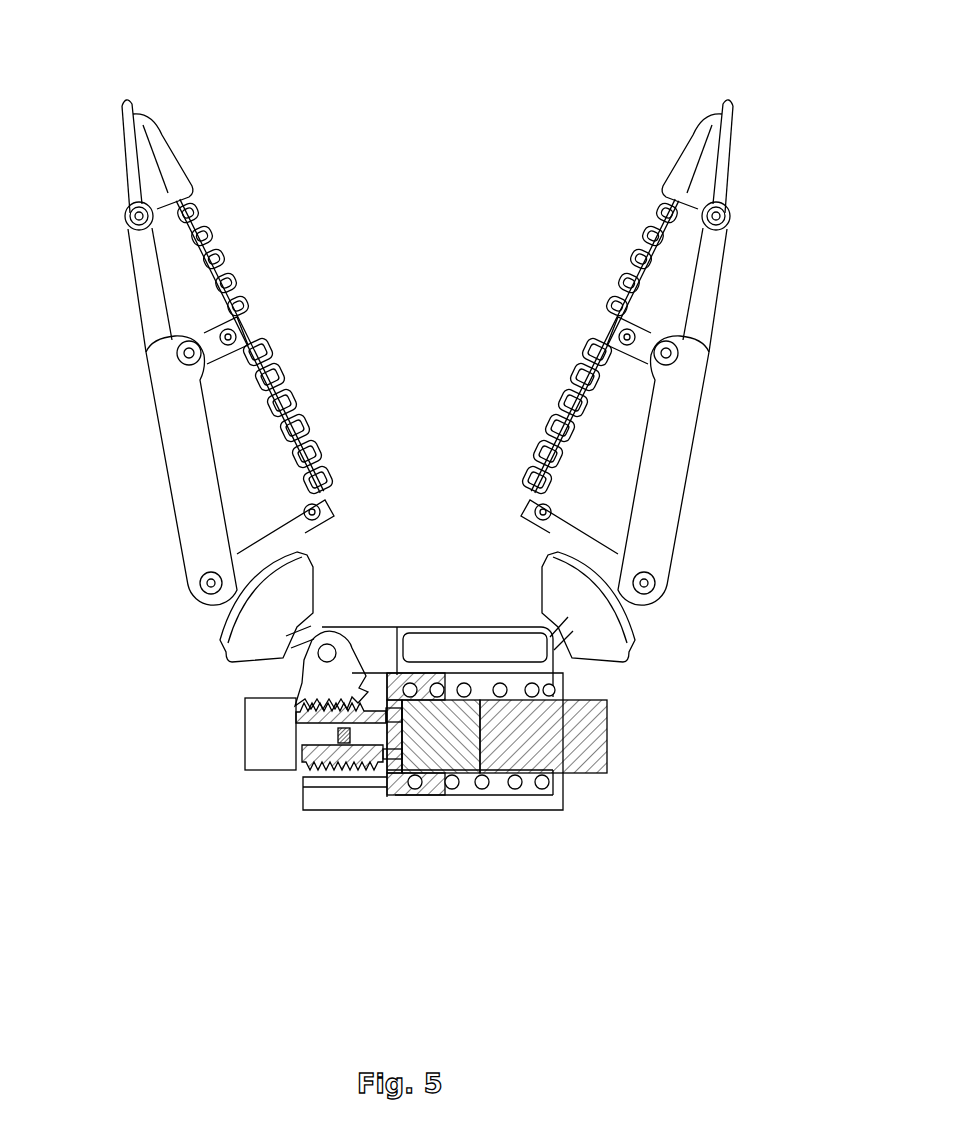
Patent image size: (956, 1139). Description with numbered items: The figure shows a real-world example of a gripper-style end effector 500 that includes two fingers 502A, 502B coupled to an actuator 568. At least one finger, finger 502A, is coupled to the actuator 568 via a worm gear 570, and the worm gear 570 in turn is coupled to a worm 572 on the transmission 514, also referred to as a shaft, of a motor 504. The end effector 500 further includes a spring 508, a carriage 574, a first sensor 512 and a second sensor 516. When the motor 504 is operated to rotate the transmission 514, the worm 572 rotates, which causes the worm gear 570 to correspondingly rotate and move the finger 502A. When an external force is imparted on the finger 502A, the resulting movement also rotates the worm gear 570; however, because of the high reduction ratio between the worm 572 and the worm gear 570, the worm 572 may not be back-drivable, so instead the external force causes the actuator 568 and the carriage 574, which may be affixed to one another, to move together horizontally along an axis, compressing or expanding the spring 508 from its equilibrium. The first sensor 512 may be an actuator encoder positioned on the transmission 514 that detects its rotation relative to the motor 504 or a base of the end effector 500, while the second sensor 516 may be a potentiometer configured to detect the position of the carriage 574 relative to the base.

The gripper-style end effector 500 is at (410, 128).
The finger 502A is at (150, 262).
The finger 502B is at (705, 262).
The motor 504 is at (427, 762).
The spring 508 is at (518, 780).
The first sensor 512 is at (337, 733).
The transmission 514 is at (397, 752).
The second sensor 516 is at (485, 648).
The actuator 568 is at (572, 752).
The worm gear 570 is at (318, 680).
The worm 572 is at (297, 722).
The carriage 574 is at (400, 697).